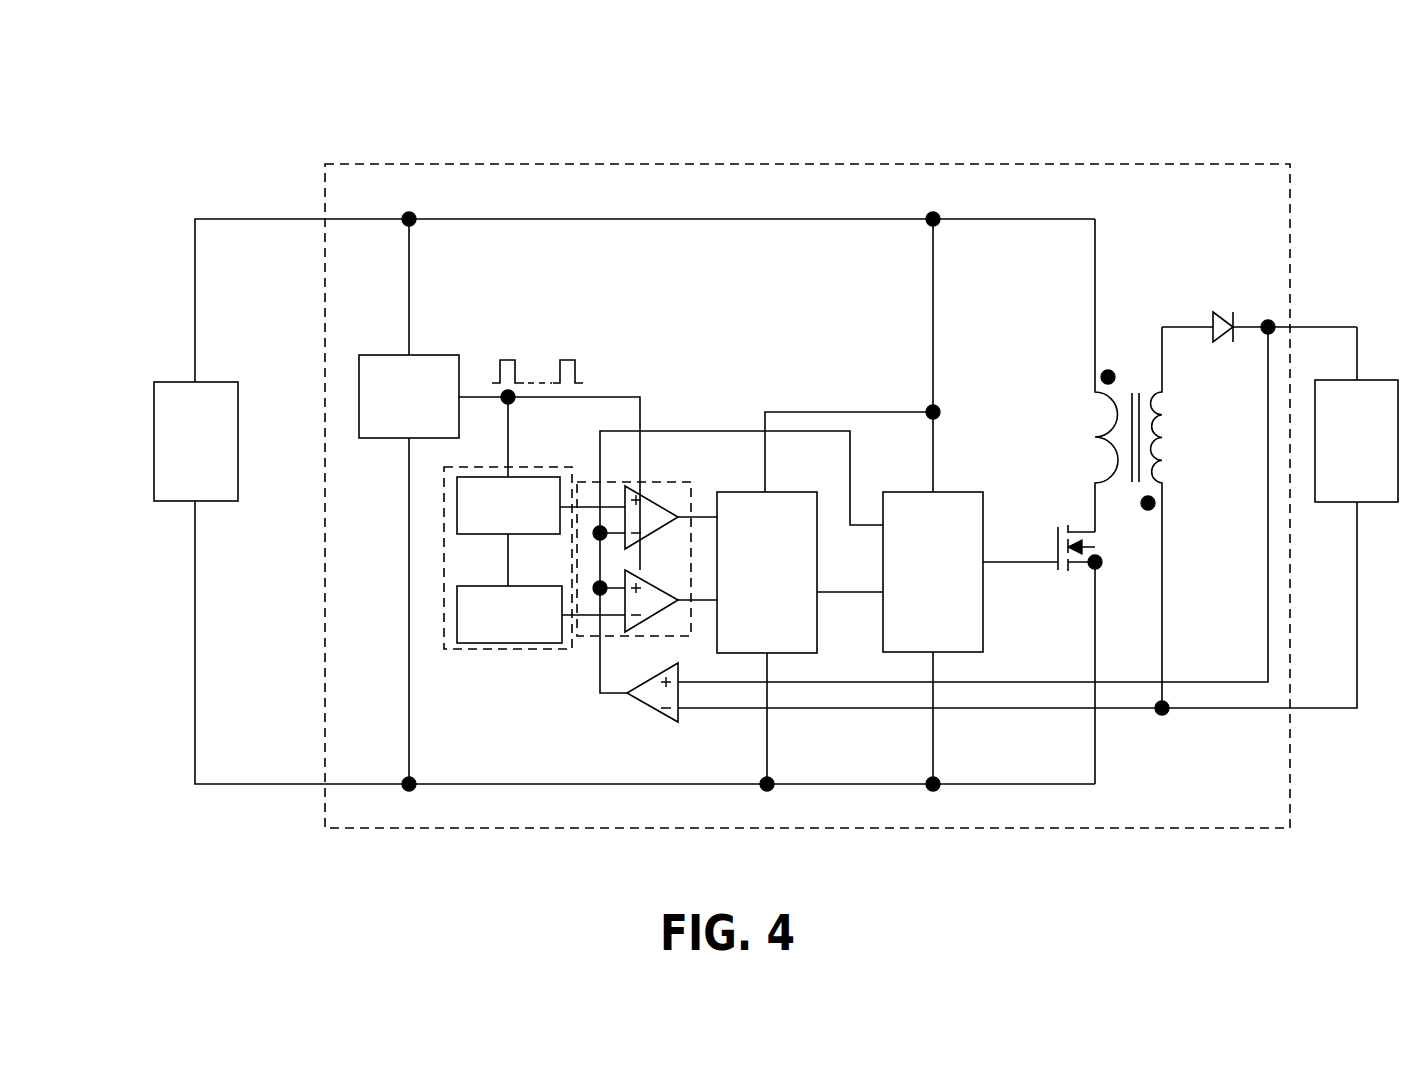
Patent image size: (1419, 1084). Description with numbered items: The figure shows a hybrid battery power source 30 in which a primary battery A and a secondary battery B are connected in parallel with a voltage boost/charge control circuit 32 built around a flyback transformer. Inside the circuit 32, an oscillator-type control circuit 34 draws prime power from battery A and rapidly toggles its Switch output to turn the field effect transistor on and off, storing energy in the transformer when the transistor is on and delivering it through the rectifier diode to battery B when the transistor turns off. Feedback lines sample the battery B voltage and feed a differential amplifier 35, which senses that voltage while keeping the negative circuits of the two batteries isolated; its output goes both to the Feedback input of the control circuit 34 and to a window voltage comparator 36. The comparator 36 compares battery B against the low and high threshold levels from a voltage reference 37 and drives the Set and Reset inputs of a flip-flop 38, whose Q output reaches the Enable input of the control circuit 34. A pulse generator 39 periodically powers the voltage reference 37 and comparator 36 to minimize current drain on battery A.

The hybrid battery power source 30 is at (197, 143).
The voltage boost/charge control circuit 32 is at (413, 163).
The control circuit 34 is at (883, 620).
The differential amplifier 35 is at (665, 722).
The window voltage comparator 36 is at (582, 637).
The voltage reference 37 is at (493, 652).
The flip-flop 38 is at (753, 653).
The pulse generator 39 is at (392, 439).